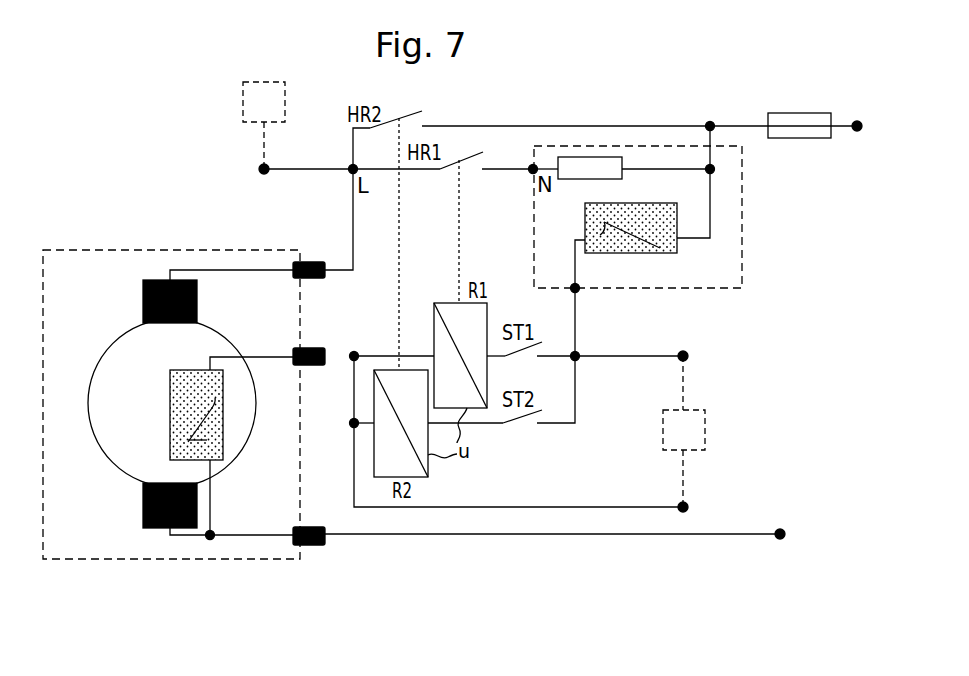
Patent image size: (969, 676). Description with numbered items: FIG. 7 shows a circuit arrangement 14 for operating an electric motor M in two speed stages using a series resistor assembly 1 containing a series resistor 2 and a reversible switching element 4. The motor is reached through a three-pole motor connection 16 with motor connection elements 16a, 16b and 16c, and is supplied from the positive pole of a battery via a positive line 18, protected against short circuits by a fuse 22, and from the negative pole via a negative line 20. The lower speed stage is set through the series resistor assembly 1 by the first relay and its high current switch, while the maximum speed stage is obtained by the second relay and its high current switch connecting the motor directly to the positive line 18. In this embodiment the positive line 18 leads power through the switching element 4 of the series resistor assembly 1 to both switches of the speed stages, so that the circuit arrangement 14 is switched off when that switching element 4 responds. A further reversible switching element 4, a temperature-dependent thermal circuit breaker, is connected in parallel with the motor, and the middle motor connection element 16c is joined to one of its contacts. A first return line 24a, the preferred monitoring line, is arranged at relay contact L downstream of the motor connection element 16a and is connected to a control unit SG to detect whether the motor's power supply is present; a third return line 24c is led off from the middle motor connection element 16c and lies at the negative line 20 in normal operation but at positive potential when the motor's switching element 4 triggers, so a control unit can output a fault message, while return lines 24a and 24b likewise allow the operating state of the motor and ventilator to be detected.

The series resistor assembly 1 is at (735, 177).
The series resistor 2 is at (587, 163).
The reversible switching element 4 is at (652, 247).
The circuit arrangement 14 is at (101, 197).
The motor connection 16 is at (193, 394).
The motor connection element 16a is at (313, 279).
The motor connection element 16b is at (313, 546).
The third motor connection element 16c is at (313, 366).
The positive line 18 is at (353, 225).
The negative line 20 is at (683, 539).
The fuse 22 is at (801, 113).
The first return line 24a is at (258, 169).
The return line 24b is at (688, 355).
The third return line 24c is at (688, 507).